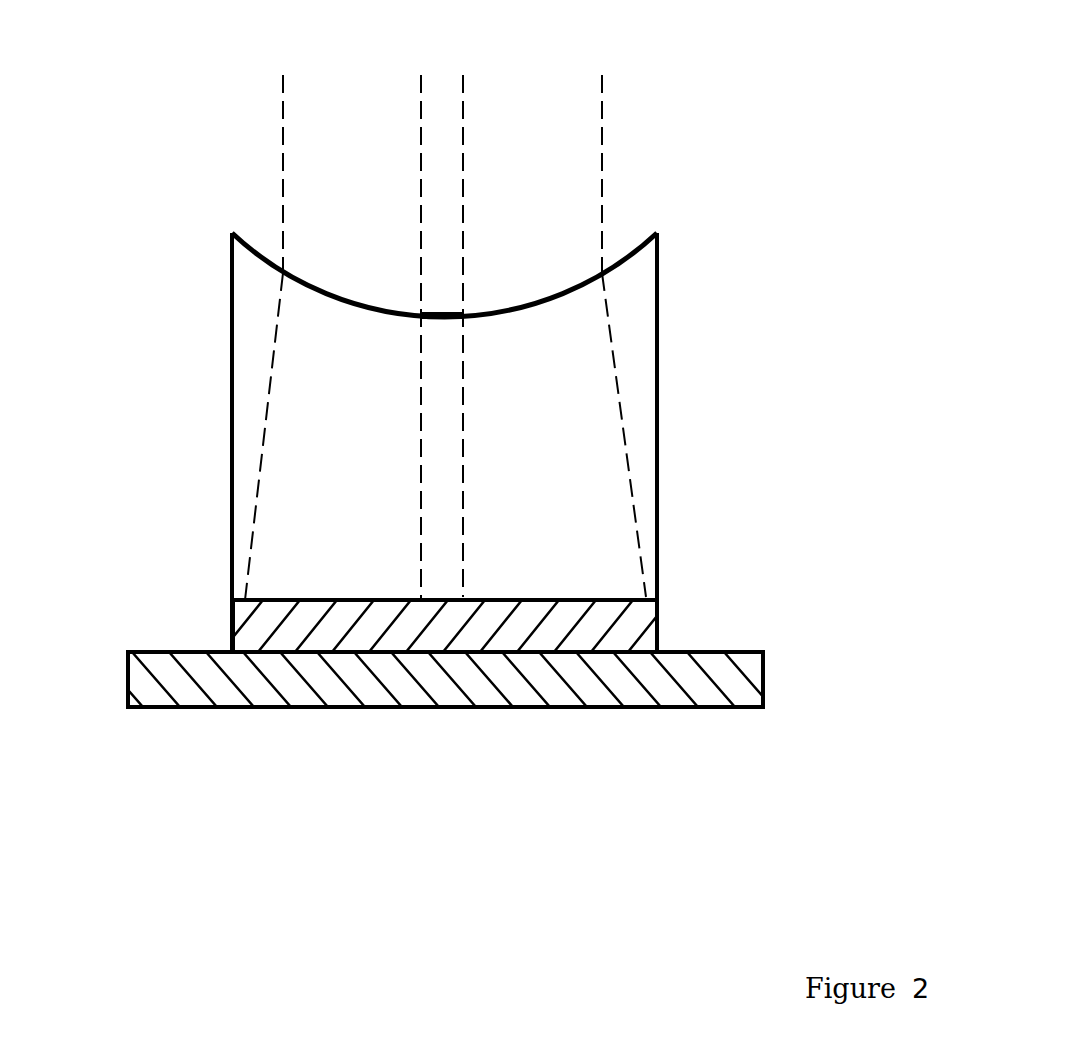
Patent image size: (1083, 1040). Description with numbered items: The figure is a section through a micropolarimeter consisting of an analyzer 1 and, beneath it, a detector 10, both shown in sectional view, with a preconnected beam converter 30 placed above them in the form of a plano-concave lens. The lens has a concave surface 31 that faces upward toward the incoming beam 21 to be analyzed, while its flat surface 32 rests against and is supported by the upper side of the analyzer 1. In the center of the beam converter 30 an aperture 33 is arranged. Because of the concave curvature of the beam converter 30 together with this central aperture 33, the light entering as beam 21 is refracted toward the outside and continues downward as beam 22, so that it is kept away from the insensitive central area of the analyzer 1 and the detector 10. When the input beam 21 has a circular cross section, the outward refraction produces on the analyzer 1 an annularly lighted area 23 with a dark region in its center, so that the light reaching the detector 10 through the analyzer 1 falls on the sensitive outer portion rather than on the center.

The analyzer 1 is at (650, 626).
The detector 10 is at (763, 673).
The beam 21 is at (555, 128).
The beam 22 is at (317, 442).
The annularly lighted area 23 is at (580, 598).
The beam converter 30 is at (403, 366).
The concave surface 31 is at (305, 283).
The flat surface 32 is at (310, 598).
The aperture 33 is at (448, 310).